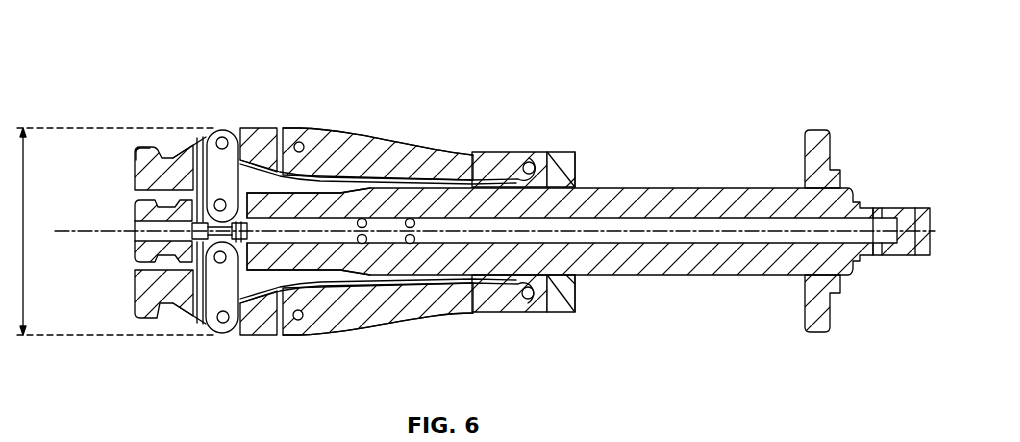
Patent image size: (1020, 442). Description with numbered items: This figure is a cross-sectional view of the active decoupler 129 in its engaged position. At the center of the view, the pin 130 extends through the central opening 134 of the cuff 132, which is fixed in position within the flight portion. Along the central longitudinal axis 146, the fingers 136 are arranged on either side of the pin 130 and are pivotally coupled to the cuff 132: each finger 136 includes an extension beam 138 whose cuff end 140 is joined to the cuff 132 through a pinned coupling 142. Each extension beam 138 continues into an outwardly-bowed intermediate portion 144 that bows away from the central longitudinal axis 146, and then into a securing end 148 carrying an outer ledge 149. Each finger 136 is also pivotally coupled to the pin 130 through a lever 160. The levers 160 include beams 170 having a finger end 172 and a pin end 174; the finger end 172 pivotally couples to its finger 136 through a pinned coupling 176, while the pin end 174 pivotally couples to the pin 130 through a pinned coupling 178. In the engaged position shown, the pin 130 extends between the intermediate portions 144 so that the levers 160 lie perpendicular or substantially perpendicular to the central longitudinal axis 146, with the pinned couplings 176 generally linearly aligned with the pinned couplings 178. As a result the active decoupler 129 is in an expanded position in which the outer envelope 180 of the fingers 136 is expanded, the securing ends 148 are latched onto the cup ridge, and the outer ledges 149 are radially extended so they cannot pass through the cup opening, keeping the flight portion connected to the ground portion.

The active decoupler 129 is at (187, 44).
The pin 130 is at (702, 188).
The cuff 132 is at (572, 185).
The central opening 134 is at (575, 187).
The finger 136 is at (383, 142).
The extension beam 138 is at (437, 157).
The cuff end 140 is at (480, 160).
The pinned coupling 142 is at (529, 161).
The intermediate portion 144 is at (333, 131).
The central longitudinal axis 146 is at (110, 228).
The securing end 148 is at (152, 145).
The outer ledge 149 is at (143, 147).
The lever 160 is at (233, 163).
The beam 170 is at (215, 173).
The finger end 172 is at (213, 137).
The pin end 174 is at (212, 208).
The pinned coupling 176 is at (223, 137).
The pinned coupling 178 is at (277, 163).
The outer envelope 180 is at (25, 165).